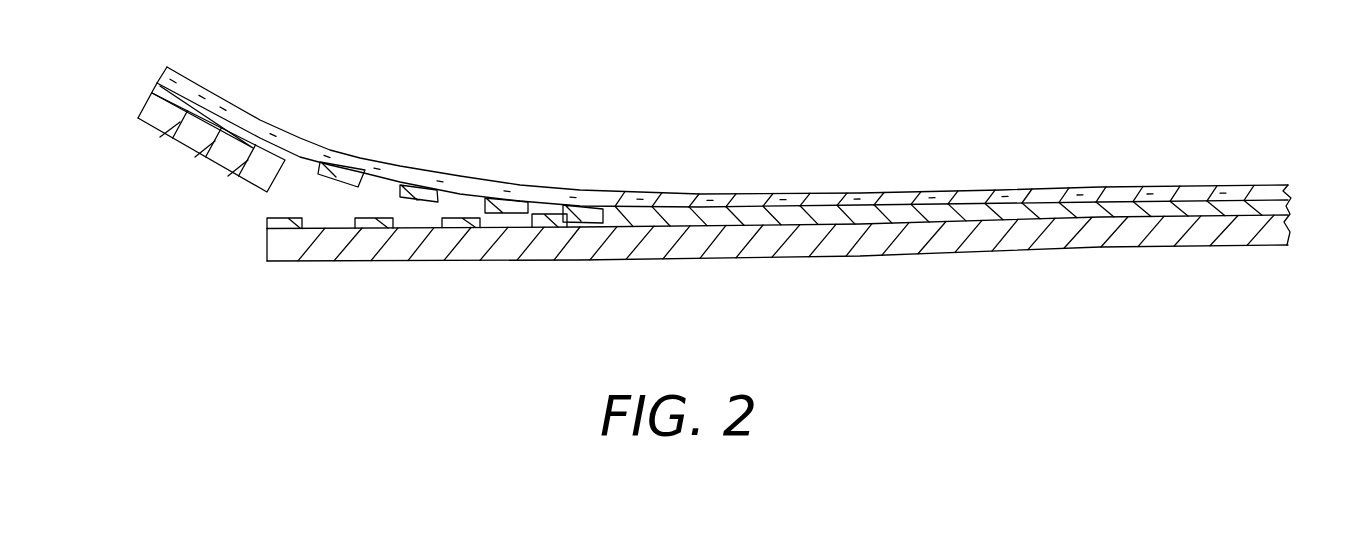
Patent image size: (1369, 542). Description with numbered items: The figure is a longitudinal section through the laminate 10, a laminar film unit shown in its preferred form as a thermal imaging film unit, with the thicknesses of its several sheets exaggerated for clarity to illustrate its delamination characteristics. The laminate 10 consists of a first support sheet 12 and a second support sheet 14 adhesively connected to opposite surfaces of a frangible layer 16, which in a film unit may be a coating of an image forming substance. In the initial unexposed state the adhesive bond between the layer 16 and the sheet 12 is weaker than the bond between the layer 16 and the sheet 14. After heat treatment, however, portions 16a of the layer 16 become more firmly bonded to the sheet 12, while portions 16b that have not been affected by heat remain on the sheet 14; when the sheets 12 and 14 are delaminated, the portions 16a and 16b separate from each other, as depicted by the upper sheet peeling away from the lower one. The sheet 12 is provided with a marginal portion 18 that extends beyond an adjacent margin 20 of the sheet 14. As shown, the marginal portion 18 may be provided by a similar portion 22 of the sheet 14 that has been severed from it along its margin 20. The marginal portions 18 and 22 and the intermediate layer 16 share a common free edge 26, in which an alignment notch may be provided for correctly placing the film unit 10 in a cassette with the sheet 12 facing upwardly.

The laminate 10 is at (688, 75).
The first support sheet 12 is at (910, 193).
The second support sheet 14 is at (778, 240).
The frangible layer 16 is at (1284, 203).
The portions of the frangible layer 16a is at (508, 204).
The portions of the frangible layer 16b is at (547, 227).
The marginal portion 18 is at (299, 123).
The margin 20 is at (268, 247).
The portion of the sheet 22 is at (172, 138).
The common free edge 26 is at (165, 90).